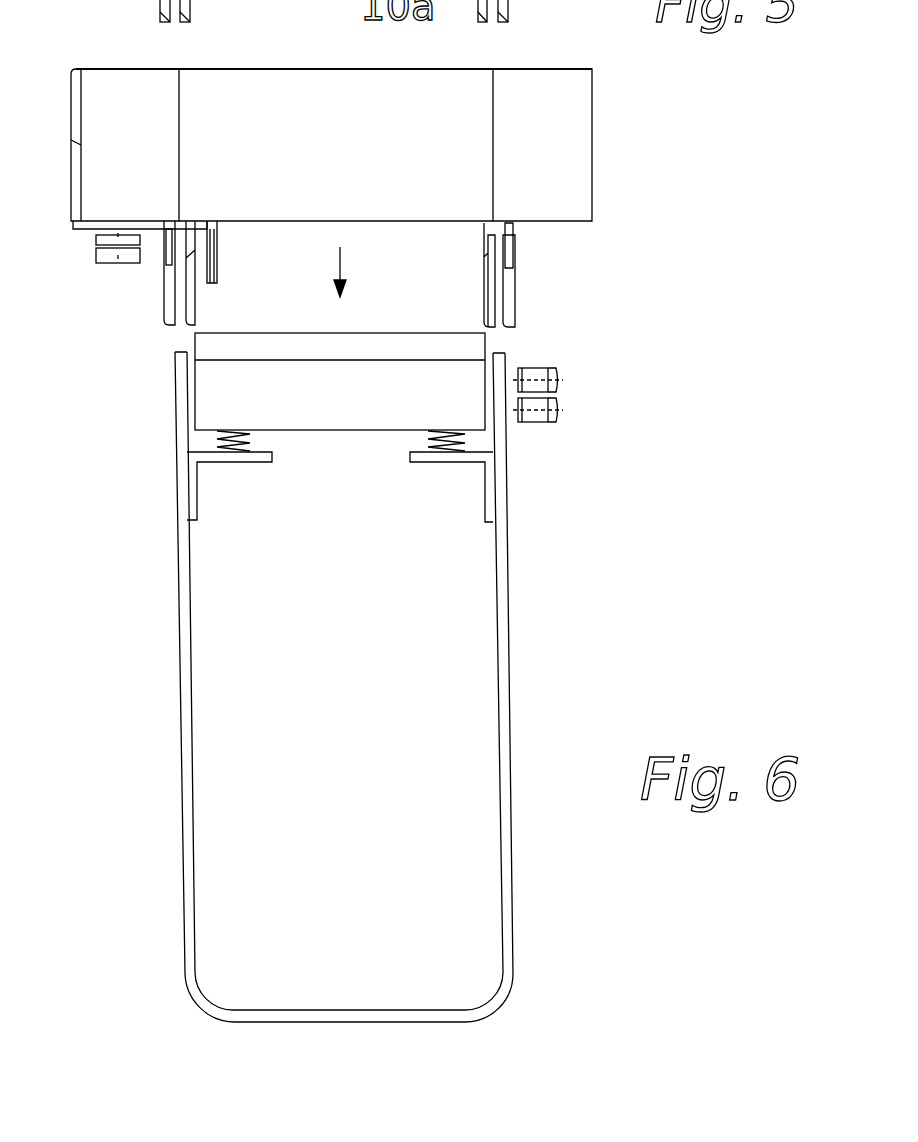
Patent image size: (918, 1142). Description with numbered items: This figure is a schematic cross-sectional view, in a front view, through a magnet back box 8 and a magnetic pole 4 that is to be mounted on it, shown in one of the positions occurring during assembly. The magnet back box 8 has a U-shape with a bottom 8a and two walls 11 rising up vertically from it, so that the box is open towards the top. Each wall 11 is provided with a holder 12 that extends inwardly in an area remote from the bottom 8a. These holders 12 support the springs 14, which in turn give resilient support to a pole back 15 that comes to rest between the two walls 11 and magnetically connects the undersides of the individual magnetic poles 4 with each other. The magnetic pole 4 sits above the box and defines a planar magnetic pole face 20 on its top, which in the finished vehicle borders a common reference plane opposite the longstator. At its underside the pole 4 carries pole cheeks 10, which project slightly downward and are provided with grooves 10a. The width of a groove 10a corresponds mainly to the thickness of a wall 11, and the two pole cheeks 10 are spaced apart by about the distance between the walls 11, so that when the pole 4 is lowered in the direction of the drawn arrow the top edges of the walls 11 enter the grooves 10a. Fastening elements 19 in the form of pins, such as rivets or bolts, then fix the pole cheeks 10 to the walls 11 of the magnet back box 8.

The magnetic pole 4 is at (593, 150).
The magnetic pole face 20 is at (255, 62).
The pole cheek 10 is at (520, 268).
The groove 10a is at (497, 300).
The magnet back box 8 is at (357, 687).
The bottom 8a is at (435, 1015).
The wall 11 is at (187, 748).
The holder 12 is at (263, 458).
The spring 14 is at (250, 446).
The pole back 15 is at (228, 405).
The fastening element 19 is at (533, 412).